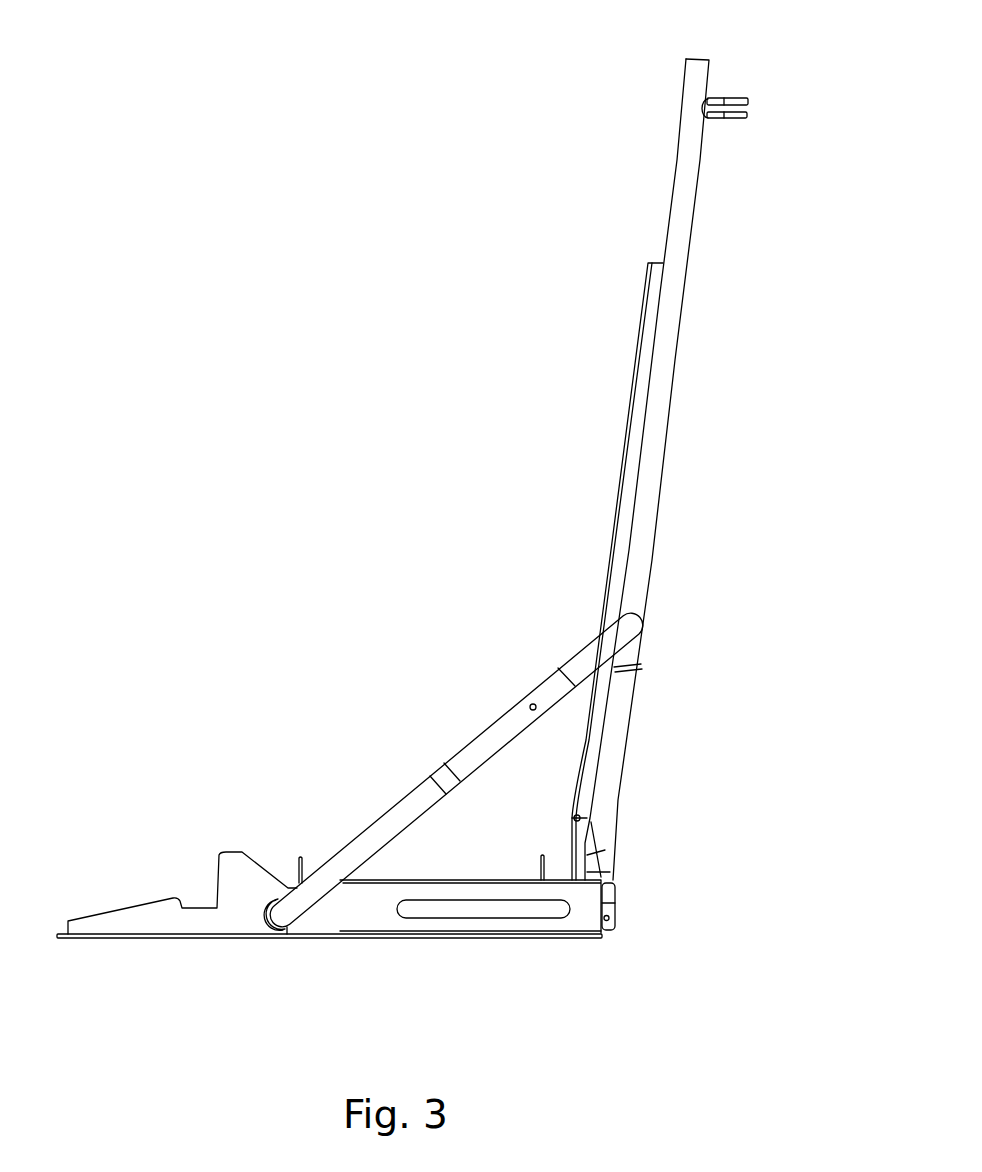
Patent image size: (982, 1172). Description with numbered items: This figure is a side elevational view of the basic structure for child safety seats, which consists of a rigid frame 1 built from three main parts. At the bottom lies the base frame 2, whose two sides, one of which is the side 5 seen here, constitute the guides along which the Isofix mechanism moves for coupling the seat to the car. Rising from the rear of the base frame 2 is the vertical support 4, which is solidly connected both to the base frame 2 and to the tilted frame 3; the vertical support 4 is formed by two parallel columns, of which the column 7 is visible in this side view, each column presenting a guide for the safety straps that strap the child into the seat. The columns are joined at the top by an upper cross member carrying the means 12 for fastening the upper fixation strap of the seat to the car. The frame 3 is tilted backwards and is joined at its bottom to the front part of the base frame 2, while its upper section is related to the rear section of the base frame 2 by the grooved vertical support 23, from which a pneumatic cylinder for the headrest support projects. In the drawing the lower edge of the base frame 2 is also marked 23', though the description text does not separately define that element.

The rigid frame 1 is at (668, 668).
The base frame 2 is at (608, 900).
The tilted frame 3 is at (442, 770).
The vertical support 4 is at (710, 343).
The side 5 is at (583, 920).
The column 7 is at (678, 212).
The means for fastening the upper fixation strap 12 is at (737, 100).
The grooved vertical support 23 is at (646, 571).
The base plate 23' is at (329, 944).